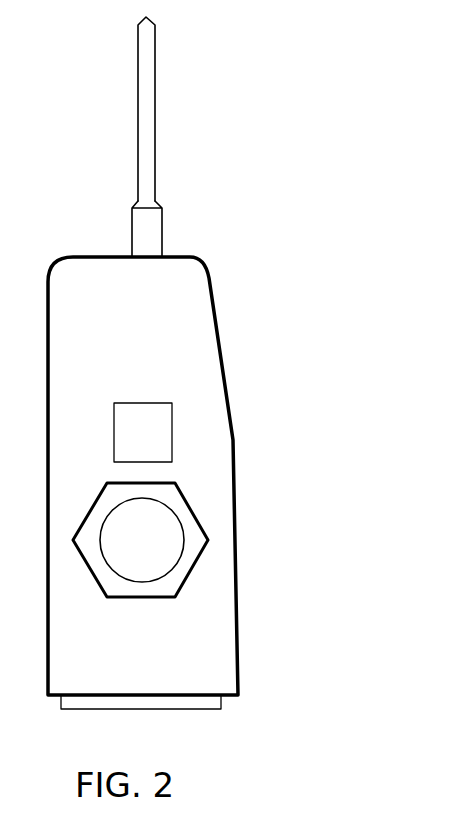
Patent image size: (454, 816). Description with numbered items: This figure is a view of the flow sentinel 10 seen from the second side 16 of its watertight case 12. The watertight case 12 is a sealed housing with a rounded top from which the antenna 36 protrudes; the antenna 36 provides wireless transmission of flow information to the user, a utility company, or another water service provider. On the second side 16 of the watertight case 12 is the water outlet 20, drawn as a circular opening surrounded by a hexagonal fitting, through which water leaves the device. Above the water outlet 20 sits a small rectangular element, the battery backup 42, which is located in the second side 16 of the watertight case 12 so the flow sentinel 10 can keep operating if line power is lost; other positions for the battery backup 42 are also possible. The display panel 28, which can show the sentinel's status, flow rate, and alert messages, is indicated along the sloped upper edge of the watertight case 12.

The flow sentinel 10 is at (238, 363).
The watertight case 12 is at (239, 620).
The second side 16 is at (202, 647).
The water outlet 20 is at (147, 510).
The display panel 28 is at (224, 340).
The antenna 36 is at (152, 227).
The battery backup 42 is at (145, 437).